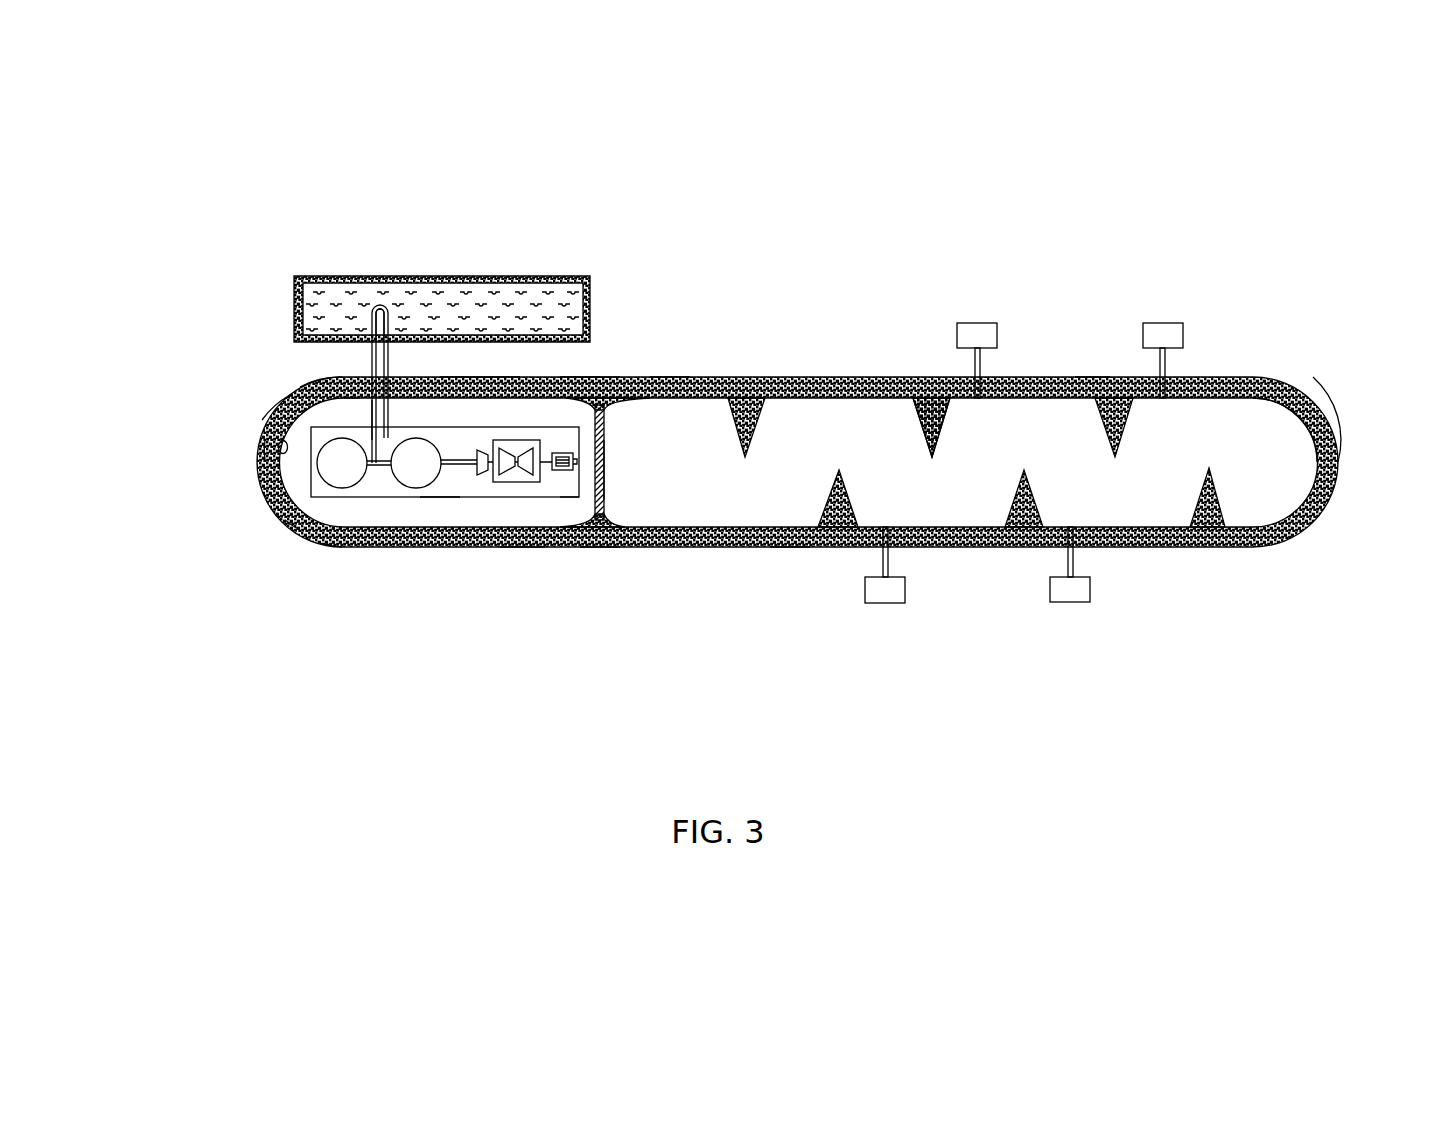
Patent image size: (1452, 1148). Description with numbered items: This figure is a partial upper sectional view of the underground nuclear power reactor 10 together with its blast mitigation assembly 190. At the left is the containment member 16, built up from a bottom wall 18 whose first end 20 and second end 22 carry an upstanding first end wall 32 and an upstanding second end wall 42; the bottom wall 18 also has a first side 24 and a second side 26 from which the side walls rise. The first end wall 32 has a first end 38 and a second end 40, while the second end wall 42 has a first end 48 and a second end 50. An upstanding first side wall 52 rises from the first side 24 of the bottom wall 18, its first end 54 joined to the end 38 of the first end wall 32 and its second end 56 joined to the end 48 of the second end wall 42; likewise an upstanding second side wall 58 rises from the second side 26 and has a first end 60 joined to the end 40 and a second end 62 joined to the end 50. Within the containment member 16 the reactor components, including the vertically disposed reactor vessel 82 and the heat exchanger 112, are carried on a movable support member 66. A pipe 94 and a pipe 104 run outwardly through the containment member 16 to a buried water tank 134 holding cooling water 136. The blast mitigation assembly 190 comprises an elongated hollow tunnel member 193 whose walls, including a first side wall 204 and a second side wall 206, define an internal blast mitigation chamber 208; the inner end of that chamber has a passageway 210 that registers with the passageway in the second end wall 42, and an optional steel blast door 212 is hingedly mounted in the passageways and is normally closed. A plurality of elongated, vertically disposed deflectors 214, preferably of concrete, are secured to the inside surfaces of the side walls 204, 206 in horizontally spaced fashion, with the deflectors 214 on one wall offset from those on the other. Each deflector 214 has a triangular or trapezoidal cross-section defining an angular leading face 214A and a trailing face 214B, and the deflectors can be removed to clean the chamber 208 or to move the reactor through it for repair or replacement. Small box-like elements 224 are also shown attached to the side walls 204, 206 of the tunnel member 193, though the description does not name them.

The underground nuclear power reactor 10 is at (292, 517).
The containment member 16 is at (579, 377).
The bottom wall 18 is at (438, 515).
The first end 20 is at (265, 450).
The second end 22 is at (568, 503).
The machinery housing 24 is at (367, 483).
The interior space 26 is at (345, 398).
The first end wall 32 is at (262, 416).
The first end 38 is at (349, 489).
The second end 40 is at (302, 387).
The second end wall 42 is at (607, 394).
The first end 48 is at (612, 518).
The second end 50 is at (649, 446).
The first side wall 52 is at (521, 550).
The first end 54 is at (327, 545).
The second end 56 is at (600, 548).
The second side wall 58 is at (470, 376).
The first end 60 is at (350, 413).
The second end 62 is at (603, 377).
The movable support member 66 is at (556, 432).
The reactor vessel 82 is at (313, 475).
The pipe 94 is at (353, 339).
The pipe 104 is at (393, 330).
The heat exchanger 112 is at (410, 490).
The buried water tank 134 is at (462, 245).
The cooling water 136 is at (553, 293).
The blast mitigation assembly 190 is at (1289, 352).
The tunnel member 193 is at (1345, 463).
The first side wall 204 is at (790, 548).
The second side wall 206 is at (1093, 384).
The blast mitigation chamber 208 is at (1283, 435).
The passageway 210 is at (667, 377).
The blast door 212 is at (603, 472).
The deflectors 214 is at (1028, 426).
The leading face 214A is at (918, 424).
The trailing face 214B is at (942, 422).
The sensor 224 is at (1176, 331).